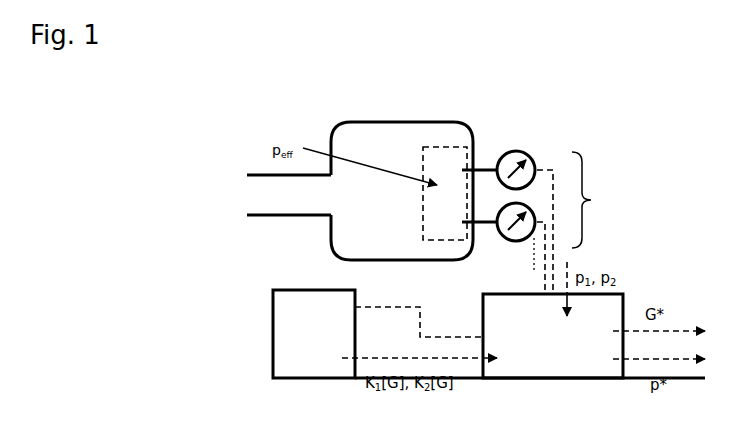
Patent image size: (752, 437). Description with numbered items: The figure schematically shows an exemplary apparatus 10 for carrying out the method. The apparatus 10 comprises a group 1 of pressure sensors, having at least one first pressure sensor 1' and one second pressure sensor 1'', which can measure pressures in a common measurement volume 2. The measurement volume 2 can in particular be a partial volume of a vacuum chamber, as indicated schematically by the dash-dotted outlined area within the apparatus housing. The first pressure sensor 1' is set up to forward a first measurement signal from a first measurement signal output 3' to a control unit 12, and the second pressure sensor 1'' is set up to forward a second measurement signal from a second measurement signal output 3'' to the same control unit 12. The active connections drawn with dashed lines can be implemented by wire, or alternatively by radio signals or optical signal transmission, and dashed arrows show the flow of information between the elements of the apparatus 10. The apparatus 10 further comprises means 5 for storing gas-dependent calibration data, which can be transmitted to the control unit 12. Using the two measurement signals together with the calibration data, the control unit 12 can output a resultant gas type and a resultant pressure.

The apparatus 10 is at (432, 95).
The common measurement volume 2 is at (445, 146).
The first pressure sensor 1' is at (506, 154).
The first measurement signal output 3' is at (563, 213).
The second pressure sensor 1'' is at (498, 245).
The second measurement signal output 3'' is at (526, 258).
The group of pressure sensors 1 is at (592, 200).
The means for storing gas-dependent calibration data 5 is at (324, 341).
The control unit 12 is at (549, 343).